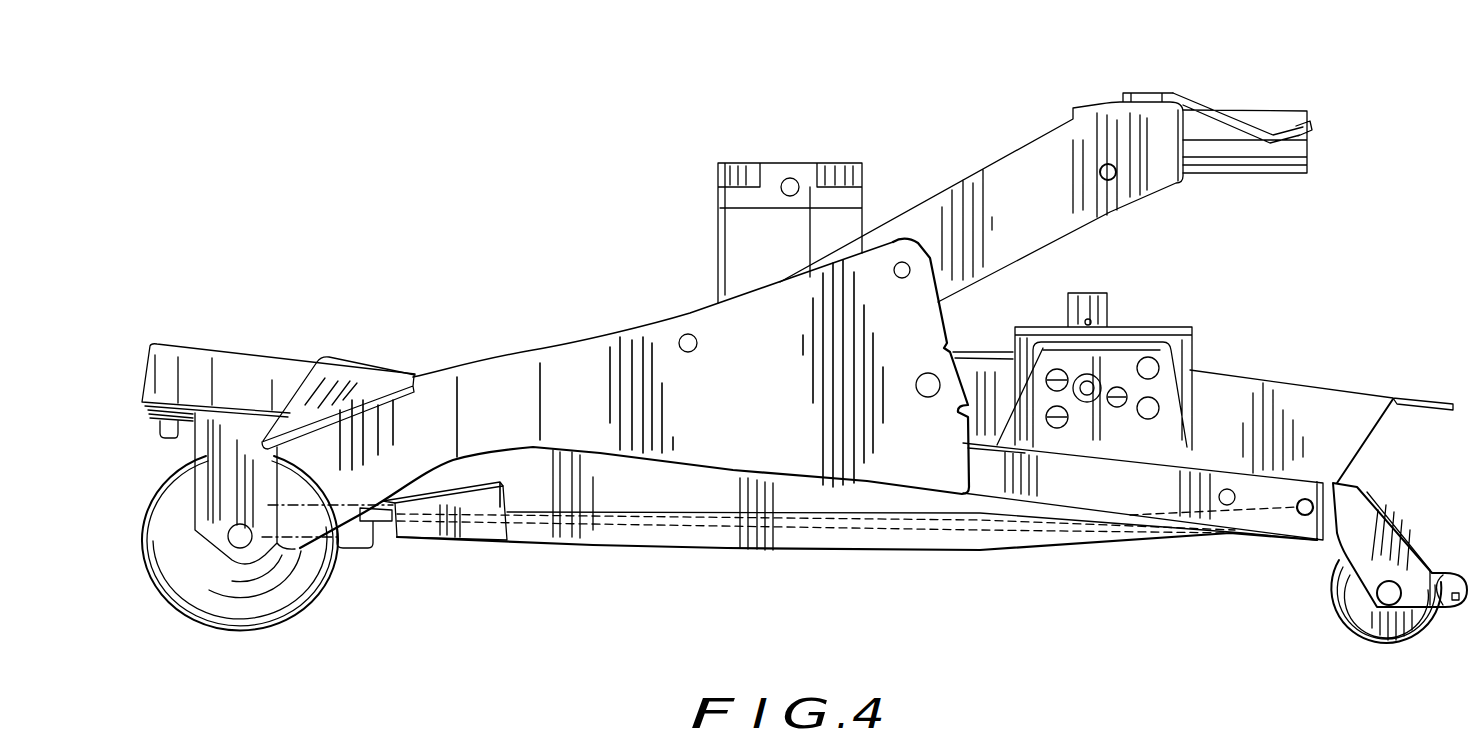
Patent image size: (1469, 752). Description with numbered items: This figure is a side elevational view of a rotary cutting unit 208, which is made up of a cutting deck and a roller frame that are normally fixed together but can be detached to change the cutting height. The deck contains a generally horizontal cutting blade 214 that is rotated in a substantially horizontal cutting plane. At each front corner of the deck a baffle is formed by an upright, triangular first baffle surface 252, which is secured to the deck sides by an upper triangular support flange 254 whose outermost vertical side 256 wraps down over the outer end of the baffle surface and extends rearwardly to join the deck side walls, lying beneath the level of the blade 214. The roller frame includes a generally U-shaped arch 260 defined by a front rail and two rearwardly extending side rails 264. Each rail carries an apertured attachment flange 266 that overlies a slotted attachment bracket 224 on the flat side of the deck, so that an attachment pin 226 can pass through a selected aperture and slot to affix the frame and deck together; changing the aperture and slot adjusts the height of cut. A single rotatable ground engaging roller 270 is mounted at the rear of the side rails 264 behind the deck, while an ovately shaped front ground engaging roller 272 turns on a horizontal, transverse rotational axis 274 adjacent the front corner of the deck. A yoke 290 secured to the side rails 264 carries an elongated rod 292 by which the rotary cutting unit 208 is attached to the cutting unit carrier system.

The rotary cutting unit 208 is at (683, 202).
The U-shaped arch 260 is at (217, 352).
The first baffle surface 252 is at (382, 522).
The upper triangular support flange 254 is at (437, 487).
The outermost vertical side 256 is at (485, 510).
The cutting blade 214 is at (1062, 530).
The side rail 264 is at (1100, 495).
The slotted attachment bracket 224 is at (1035, 330).
The attachment pin 226 is at (1092, 382).
The apertured attachment flange 266 is at (1170, 425).
The yoke 290 is at (906, 239).
The elongated rod 292 is at (1297, 110).
The ground engaging roller 270 is at (1343, 625).
The front ground engaging roller 272 is at (328, 656).
The rotational axis 274 is at (240, 548).